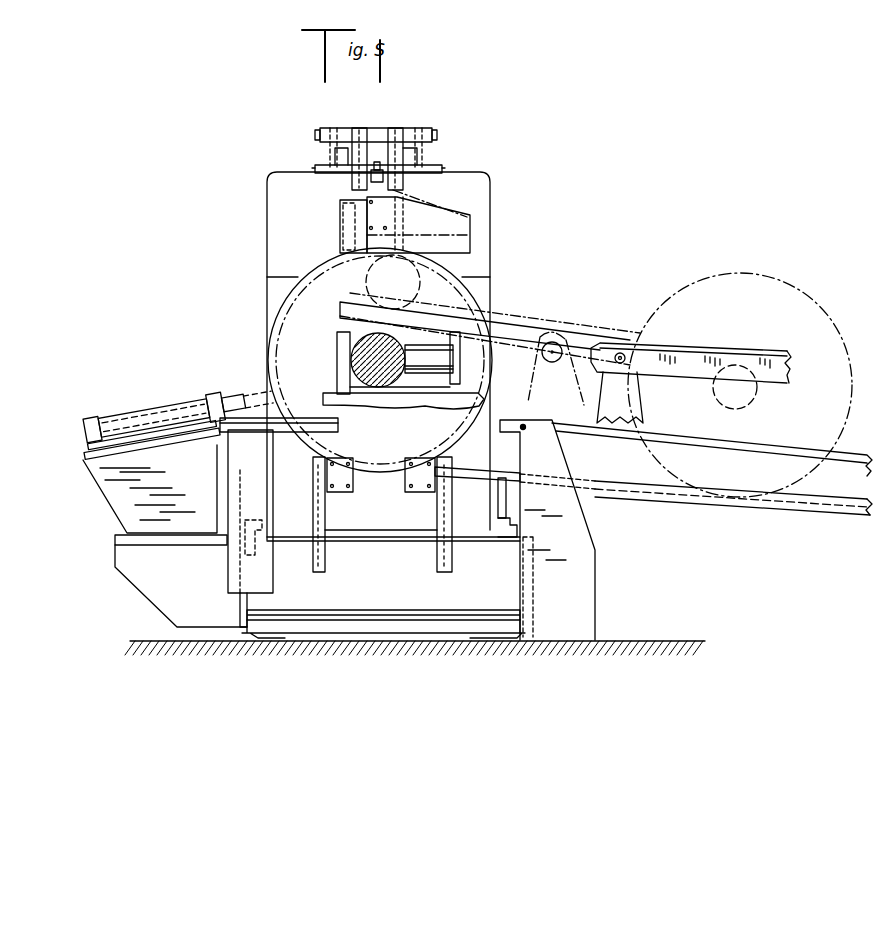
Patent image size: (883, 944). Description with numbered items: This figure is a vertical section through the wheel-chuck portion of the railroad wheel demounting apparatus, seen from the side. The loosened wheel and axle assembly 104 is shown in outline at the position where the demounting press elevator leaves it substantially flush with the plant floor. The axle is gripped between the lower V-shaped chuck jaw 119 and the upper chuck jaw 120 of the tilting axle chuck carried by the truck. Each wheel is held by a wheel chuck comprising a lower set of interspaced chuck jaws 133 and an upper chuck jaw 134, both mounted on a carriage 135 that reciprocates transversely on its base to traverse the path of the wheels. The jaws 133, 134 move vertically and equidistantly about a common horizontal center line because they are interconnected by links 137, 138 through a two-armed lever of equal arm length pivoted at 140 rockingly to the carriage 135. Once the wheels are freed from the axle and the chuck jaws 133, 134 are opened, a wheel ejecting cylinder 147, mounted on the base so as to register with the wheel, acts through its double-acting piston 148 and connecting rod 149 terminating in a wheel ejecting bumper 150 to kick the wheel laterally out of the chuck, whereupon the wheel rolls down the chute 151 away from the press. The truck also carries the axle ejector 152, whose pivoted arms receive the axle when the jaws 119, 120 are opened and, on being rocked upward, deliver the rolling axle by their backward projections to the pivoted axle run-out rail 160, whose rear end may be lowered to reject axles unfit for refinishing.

The wheel and axle assembly 104 is at (280, 303).
The lower V-shaped chuck jaw 119 is at (340, 358).
The upper chuck jaw 120 is at (430, 352).
The lower chuck jaws 133 is at (353, 477).
The upper chuck jaw 134 is at (455, 226).
The carriage 135 is at (270, 219).
The link 137 is at (337, 162).
The link 138 is at (397, 163).
The pivot 140 is at (330, 141).
The wheel ejecting cylinder 147 is at (147, 407).
The double-acting piston 148 is at (120, 411).
The connecting rod 149 is at (215, 396).
The wheel ejecting bumper 150 is at (236, 394).
The chute 151 is at (828, 488).
The axle ejector 152 is at (523, 330).
The axle run-out rail 160 is at (712, 352).